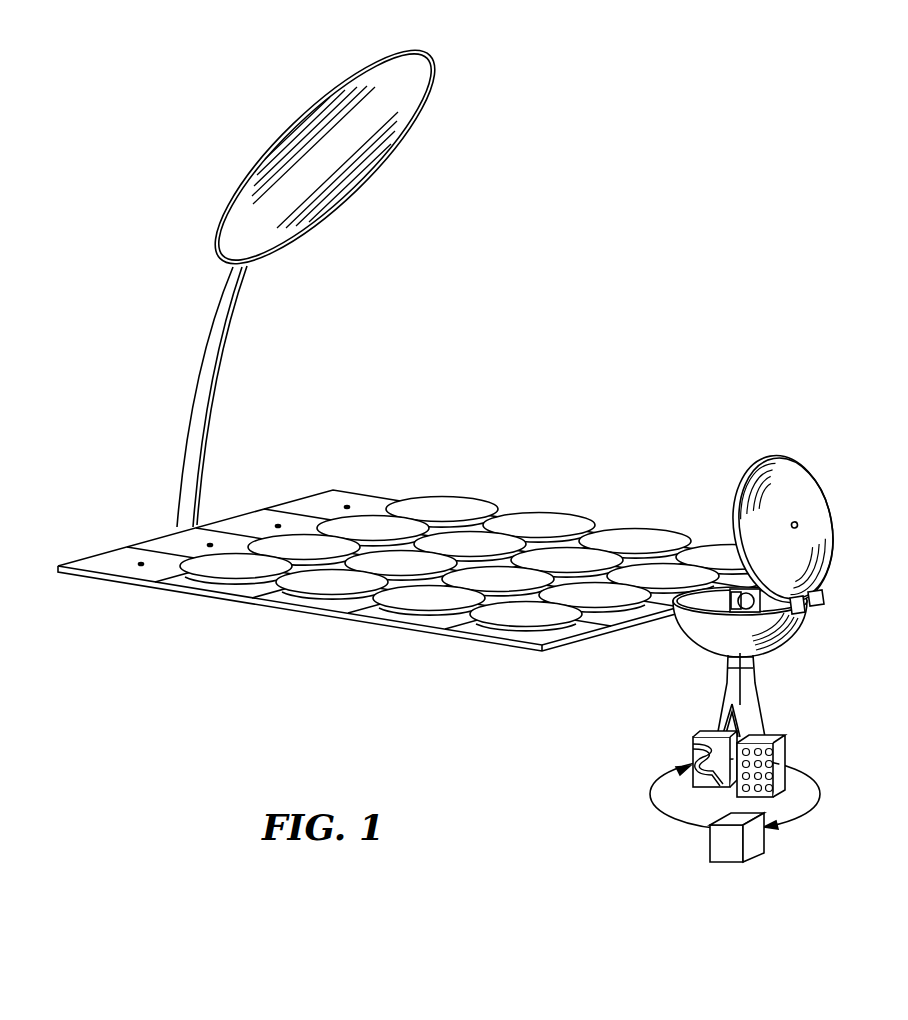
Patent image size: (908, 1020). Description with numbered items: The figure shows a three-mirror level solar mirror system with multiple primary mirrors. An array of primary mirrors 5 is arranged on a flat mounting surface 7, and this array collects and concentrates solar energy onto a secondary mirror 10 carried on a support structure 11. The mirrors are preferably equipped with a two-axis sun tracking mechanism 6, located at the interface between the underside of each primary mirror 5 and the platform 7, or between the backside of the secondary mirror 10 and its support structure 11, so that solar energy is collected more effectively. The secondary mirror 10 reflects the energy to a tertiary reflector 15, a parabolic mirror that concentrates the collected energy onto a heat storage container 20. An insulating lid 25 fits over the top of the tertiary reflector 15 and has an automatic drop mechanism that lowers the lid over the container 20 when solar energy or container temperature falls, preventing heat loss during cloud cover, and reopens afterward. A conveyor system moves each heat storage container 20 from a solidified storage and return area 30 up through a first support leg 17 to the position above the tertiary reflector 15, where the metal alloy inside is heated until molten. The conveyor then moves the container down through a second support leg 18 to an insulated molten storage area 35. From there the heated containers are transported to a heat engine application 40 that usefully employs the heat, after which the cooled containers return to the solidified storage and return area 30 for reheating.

The primary mirrors 5 is at (534, 501).
The two-axis sun tracking mechanism 6 is at (290, 98).
The mounting surface 7 is at (297, 485).
The secondary mirror 10 is at (445, 100).
The support structure 11 is at (180, 397).
The tertiary reflector 15 is at (671, 636).
The first support leg 17 is at (700, 716).
The second support leg 18 is at (774, 709).
The heat storage container 20 is at (735, 575).
The insulating lid 25 is at (829, 485).
The solidified storage and return area 30 is at (681, 754).
The molten storage area 35 is at (803, 756).
The heat engine application 40 is at (778, 857).